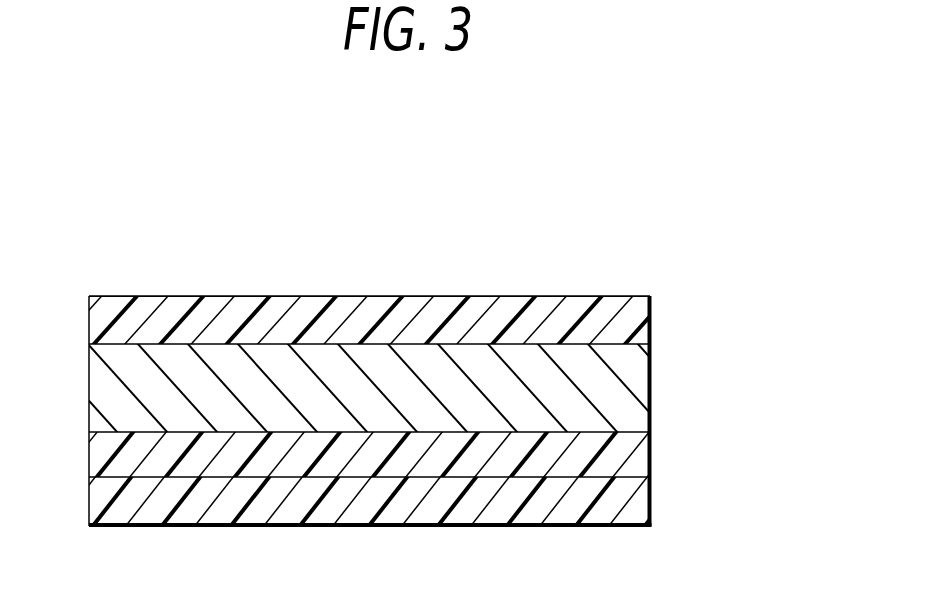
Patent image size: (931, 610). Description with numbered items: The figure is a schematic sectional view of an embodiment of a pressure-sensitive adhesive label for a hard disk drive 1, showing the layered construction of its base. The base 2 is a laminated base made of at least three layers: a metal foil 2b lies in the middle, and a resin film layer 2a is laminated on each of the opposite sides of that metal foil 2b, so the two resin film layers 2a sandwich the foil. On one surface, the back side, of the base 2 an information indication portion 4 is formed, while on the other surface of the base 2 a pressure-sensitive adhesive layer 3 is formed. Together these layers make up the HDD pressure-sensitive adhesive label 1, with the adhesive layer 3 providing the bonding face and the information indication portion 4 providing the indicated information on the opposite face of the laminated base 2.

The pressure-sensitive adhesive label for a hard disk drive 1 is at (456, 268).
The base 2 is at (757, 312).
The resin film layer 2a is at (652, 331).
The metal foil 2b is at (652, 388).
The pressure-sensitive adhesive layer 3 is at (652, 500).
The information indication portion 4 is at (213, 296).